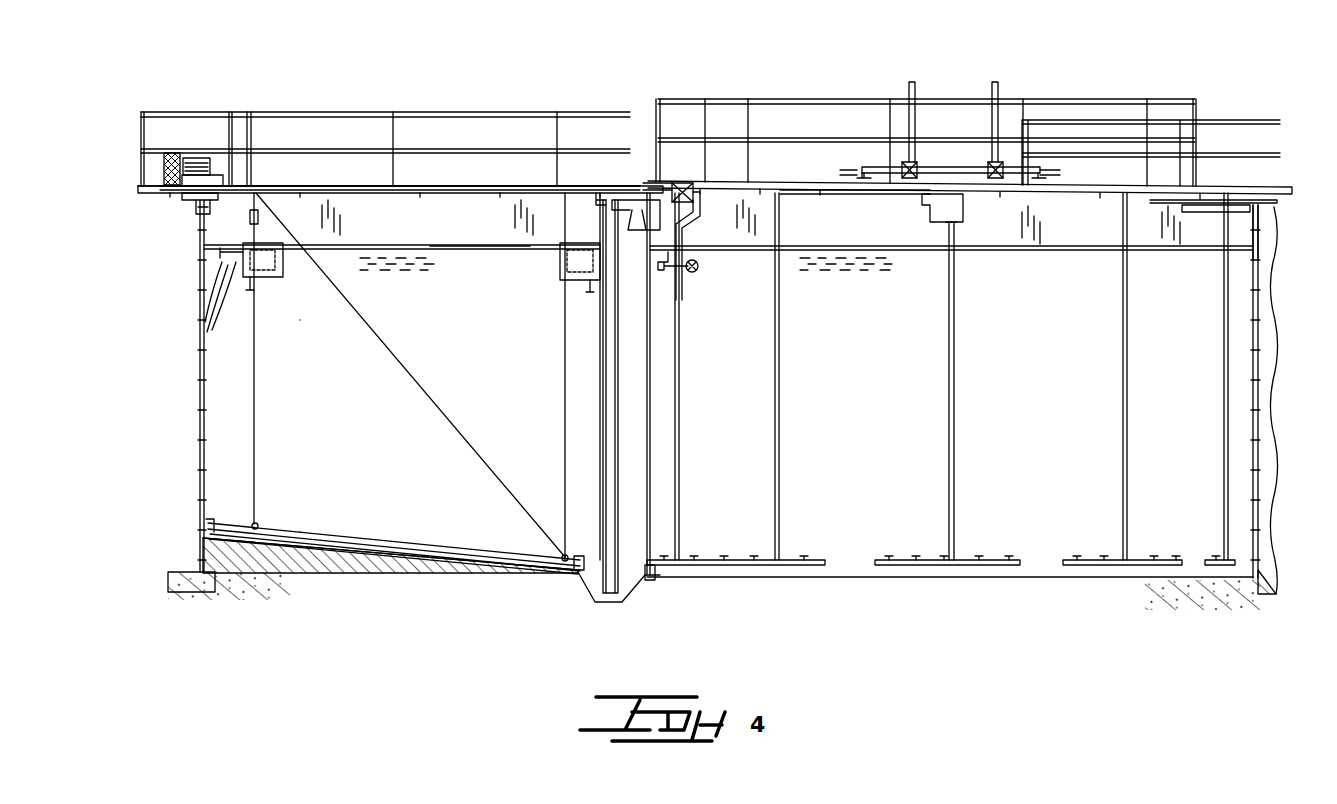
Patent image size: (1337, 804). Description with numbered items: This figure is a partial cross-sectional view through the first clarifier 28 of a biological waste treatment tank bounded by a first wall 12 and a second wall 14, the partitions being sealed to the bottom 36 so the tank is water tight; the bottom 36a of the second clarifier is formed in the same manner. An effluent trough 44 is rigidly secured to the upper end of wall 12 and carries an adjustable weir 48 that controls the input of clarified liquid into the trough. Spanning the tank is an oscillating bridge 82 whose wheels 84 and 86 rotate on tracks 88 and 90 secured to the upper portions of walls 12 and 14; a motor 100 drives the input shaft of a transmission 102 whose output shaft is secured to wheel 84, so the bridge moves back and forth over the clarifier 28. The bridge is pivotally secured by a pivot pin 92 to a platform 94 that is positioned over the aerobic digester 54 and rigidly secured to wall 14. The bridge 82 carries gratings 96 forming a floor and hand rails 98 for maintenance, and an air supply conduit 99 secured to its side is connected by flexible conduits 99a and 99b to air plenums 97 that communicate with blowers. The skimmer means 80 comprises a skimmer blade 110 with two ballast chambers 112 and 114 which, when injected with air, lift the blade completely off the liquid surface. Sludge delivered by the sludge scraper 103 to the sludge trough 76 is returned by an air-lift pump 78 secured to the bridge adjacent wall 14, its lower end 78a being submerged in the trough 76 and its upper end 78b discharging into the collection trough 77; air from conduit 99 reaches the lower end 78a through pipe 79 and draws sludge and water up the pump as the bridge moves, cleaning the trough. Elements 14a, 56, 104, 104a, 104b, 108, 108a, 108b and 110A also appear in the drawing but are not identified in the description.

The first wall 12 is at (200, 468).
The second wall 14 is at (1262, 386).
The wall anchor bracket 14a is at (653, 582).
The first clarifier zone 28 is at (230, 433).
The bottom 36 is at (445, 575).
The bottom of the second clarifier tank 36a is at (353, 576).
The effluent trough 44 is at (218, 286).
The adjustable weir 48 is at (226, 300).
The aerobic digester 54 is at (1036, 548).
The partition panels 56 is at (679, 438).
The sludge trough 76 is at (593, 586).
The collection trough 77 is at (666, 258).
The air-lift pump 78 is at (603, 392).
The lower end of air-lift pump 78a is at (650, 565).
The upper end of air-lift pump 78b is at (612, 205).
The pipe 79 is at (603, 418).
The skimmer means 80 is at (510, 262).
The oscillating bridge 82 is at (157, 200).
The wheel 84 is at (196, 202).
The wheel 86 is at (643, 183).
The track 88 is at (200, 212).
The track 90 is at (679, 183).
The pivot pin 92 is at (958, 223).
The platform 94 is at (952, 167).
The gratings 96 is at (422, 186).
The air plenums 97 is at (910, 162).
The hand rails 98 is at (438, 112).
The air supply conduit 99 is at (420, 194).
The flexible conduit 99a is at (862, 170).
The flexible conduit 99b is at (1046, 175).
The motor 100 is at (197, 158).
The transmission 102 is at (164, 170).
The sludge scraper 103 is at (326, 530).
The inclined plate 104 is at (385, 540).
The plate upper end 104a is at (213, 520).
The plate lower end 104b is at (584, 560).
The screen layer 108 is at (425, 551).
The screen upper fastener 108a is at (256, 522).
The screen lower fastener 108b is at (563, 554).
The skimmer blade 110 is at (478, 252).
The lowered water level 110A is at (478, 258).
The ballast chamber 112 is at (278, 280).
The ballast chamber 114 is at (566, 278).